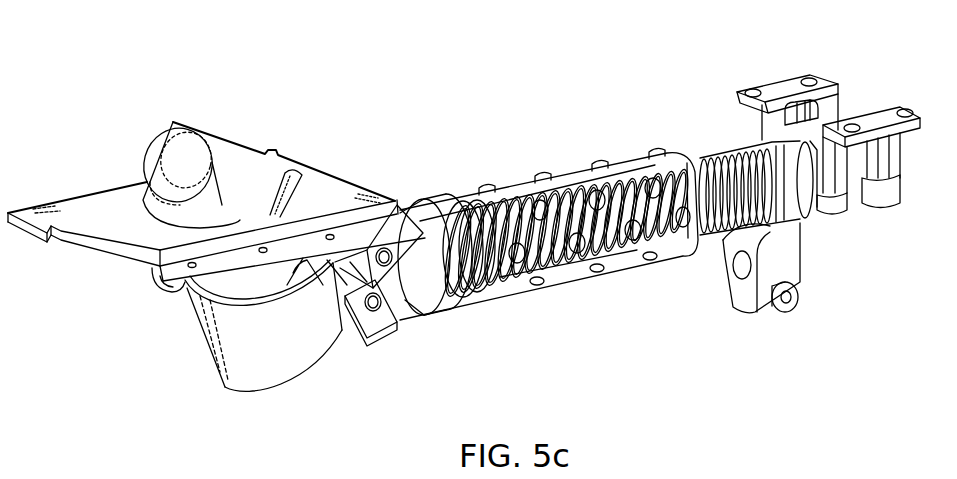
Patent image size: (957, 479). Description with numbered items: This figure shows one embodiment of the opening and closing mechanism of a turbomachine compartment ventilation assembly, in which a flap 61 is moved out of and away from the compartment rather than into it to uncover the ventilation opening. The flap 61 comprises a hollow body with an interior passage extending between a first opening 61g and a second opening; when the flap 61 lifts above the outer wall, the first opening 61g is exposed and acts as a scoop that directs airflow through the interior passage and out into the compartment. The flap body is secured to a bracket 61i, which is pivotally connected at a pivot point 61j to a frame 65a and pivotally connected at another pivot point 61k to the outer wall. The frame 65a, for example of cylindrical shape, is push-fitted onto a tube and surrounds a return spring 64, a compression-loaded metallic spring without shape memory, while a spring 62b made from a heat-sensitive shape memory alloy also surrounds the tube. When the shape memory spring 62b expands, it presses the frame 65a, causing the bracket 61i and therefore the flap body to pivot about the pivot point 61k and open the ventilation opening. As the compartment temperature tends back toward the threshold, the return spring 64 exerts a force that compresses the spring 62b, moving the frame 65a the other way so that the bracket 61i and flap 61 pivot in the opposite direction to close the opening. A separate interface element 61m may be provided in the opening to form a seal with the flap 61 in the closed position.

The flap 61 is at (242, 143).
The first opening 61g is at (168, 168).
The interface element 61m is at (335, 203).
The pivot point 61k is at (388, 248).
The pivot point 61j is at (375, 312).
The bracket 61i is at (305, 360).
The return spring 64 is at (600, 240).
The frame 65a is at (562, 207).
The spring 62b is at (714, 157).